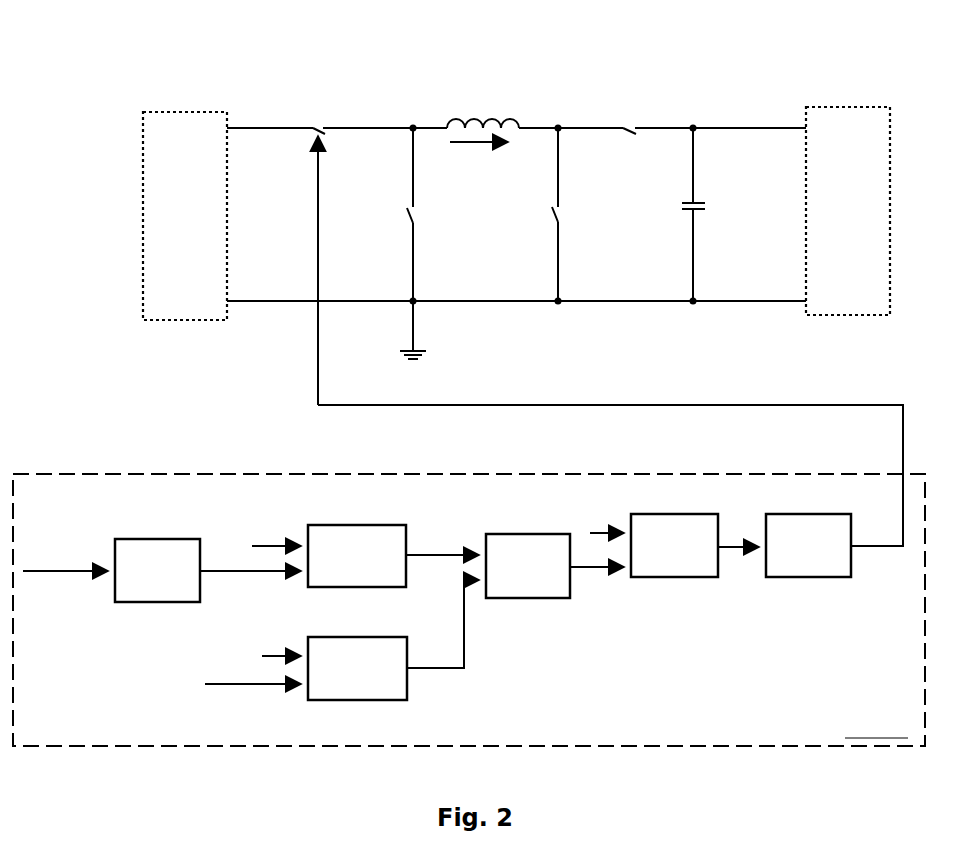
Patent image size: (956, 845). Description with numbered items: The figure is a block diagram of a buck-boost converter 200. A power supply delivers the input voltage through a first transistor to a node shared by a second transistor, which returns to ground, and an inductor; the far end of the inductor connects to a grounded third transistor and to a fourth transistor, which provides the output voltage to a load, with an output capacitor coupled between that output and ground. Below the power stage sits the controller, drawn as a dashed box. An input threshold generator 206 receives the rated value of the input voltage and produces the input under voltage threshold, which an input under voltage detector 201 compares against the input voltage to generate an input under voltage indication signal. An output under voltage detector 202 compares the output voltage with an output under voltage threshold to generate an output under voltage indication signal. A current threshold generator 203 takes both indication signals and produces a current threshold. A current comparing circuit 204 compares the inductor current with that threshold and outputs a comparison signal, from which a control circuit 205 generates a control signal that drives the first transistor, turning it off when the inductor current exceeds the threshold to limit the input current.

The buck-boost converter 200 is at (822, 53).
The input under voltage detector 201 is at (322, 588).
The output under voltage detector 202 is at (322, 700).
The current threshold generator 203 is at (508, 598).
The current comparing circuit 204 is at (652, 577).
The control circuit 205 is at (774, 577).
The input threshold generator 206 is at (128, 602).